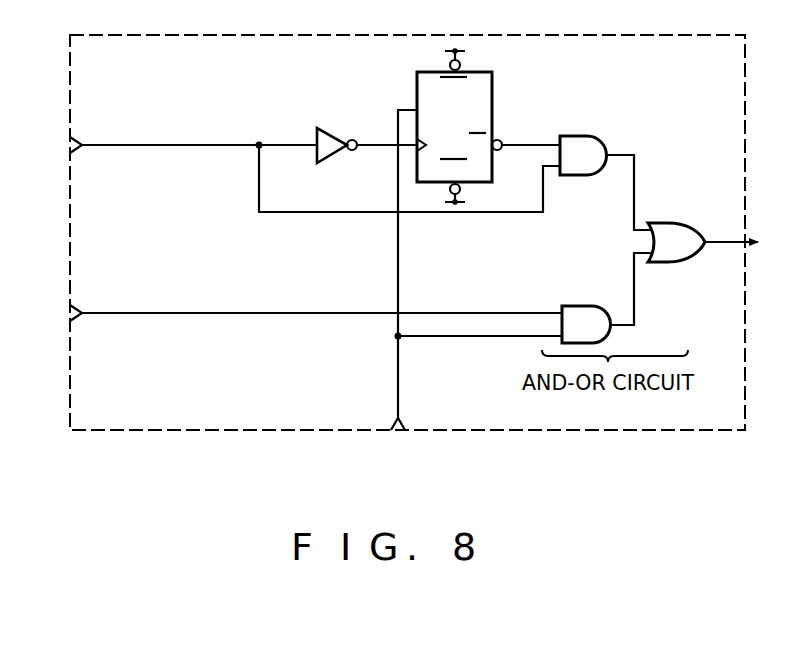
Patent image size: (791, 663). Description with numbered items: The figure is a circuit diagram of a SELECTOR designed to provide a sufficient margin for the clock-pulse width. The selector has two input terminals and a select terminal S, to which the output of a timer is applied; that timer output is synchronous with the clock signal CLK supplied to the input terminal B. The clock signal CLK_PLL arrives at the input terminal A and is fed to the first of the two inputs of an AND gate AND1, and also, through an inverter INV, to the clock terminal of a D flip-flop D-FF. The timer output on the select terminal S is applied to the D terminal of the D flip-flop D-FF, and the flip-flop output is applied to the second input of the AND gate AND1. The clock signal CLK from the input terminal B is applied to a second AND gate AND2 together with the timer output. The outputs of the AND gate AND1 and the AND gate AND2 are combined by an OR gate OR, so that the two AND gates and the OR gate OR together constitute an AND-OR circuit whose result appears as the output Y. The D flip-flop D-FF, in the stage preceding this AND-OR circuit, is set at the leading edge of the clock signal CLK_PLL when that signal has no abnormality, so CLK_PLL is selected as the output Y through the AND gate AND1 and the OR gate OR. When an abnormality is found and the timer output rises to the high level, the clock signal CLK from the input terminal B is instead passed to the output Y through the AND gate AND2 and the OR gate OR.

The input terminal A is at (302, 172).
The input terminal B is at (303, 313).
The select terminal S is at (476, 283).
The output Y is at (741, 242).
The inverter INV is at (350, 152).
The D flip-flop D-FF is at (492, 103).
The AND gate AND1 is at (590, 176).
The AND gate AND2 is at (612, 330).
The OR gate OR is at (686, 262).
The selector SELECTOR is at (407, 233).